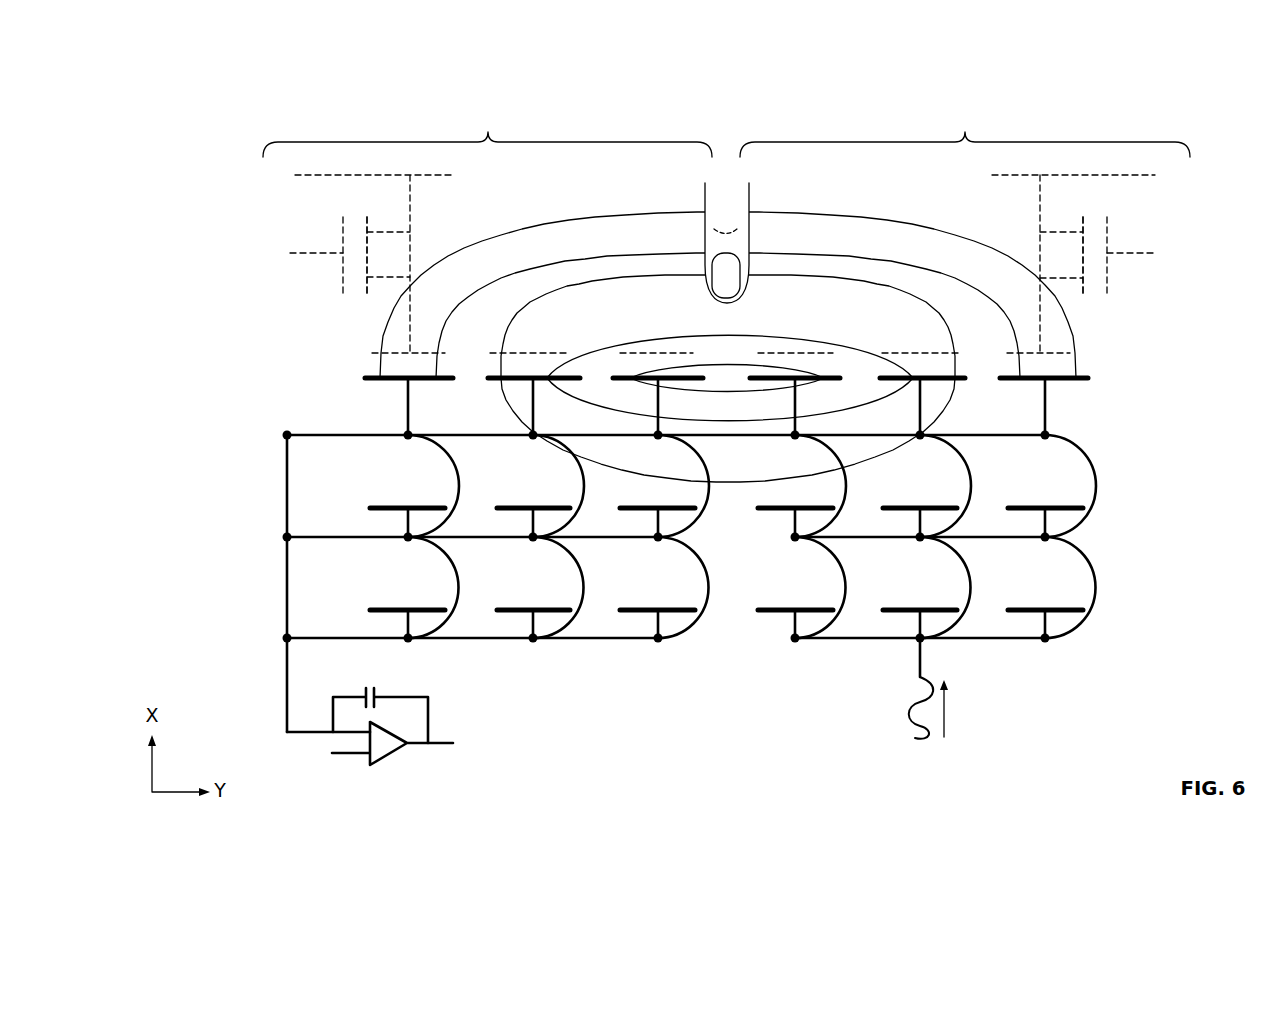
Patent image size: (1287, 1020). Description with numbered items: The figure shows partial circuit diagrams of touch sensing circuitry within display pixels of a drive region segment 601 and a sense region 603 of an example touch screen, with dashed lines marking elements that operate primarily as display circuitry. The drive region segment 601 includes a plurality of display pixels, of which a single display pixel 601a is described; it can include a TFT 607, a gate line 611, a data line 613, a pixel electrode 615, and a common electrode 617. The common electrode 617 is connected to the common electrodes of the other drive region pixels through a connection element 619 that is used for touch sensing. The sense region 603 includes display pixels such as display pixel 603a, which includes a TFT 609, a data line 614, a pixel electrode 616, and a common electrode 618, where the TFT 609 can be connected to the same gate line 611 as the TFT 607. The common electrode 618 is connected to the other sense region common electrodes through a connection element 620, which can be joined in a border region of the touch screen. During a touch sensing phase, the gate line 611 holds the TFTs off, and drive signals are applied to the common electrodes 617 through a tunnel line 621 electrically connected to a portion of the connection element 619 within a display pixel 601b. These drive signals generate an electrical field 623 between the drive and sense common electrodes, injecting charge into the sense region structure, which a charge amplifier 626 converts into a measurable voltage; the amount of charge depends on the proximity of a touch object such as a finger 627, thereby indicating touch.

The drive region segment 601 is at (965, 117).
The display pixel 601a is at (1082, 257).
The display pixel 601b is at (901, 646).
The sense region 603 is at (487, 117).
The display pixel 603a is at (363, 258).
The TFT 607 is at (1118, 239).
The TFT 609 is at (332, 231).
The gate line 611 is at (315, 253).
The data line 613 is at (1143, 175).
The data line 614 is at (295, 175).
The pixel electrode 615 is at (1033, 352).
The pixel electrode 616 is at (400, 350).
The common electrode 617 is at (1065, 380).
The common electrode 618 is at (377, 382).
The connection element 619 is at (1018, 640).
The connection element 620 is at (308, 538).
The tunnel line 621 is at (920, 668).
The electrical field 623 is at (822, 215).
The charge amplifier 626 is at (393, 748).
The finger 627 is at (705, 200).